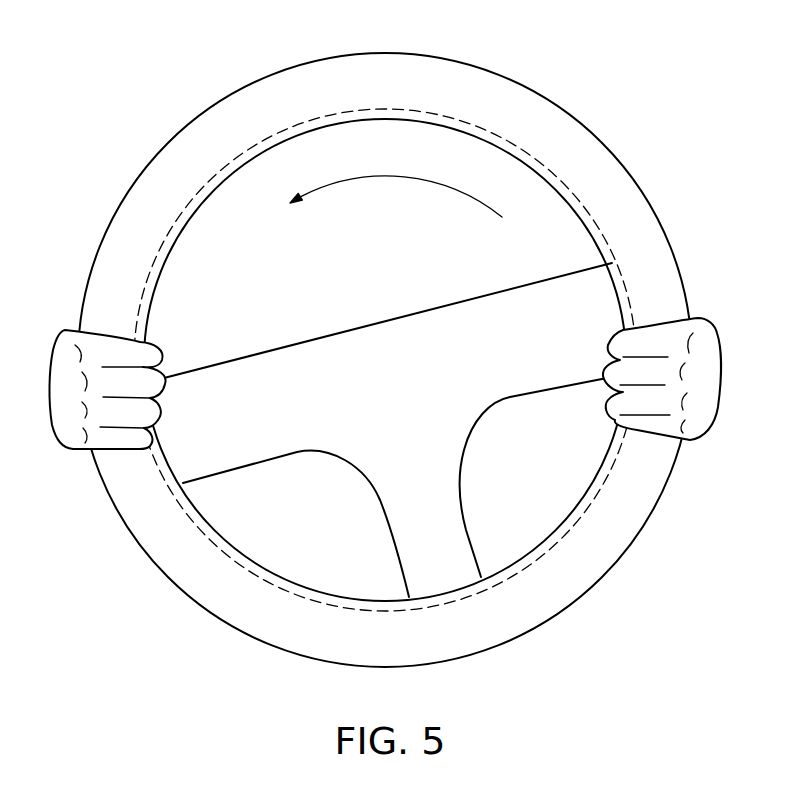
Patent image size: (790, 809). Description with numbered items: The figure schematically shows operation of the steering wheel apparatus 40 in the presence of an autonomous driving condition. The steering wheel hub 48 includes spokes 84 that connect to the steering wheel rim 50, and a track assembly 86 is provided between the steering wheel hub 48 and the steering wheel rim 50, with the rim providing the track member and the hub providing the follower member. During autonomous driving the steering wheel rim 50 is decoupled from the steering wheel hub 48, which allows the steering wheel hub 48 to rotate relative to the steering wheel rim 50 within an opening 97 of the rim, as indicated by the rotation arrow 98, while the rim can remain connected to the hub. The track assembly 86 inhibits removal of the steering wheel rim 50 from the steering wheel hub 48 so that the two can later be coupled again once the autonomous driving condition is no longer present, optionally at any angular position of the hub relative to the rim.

The steering wheel apparatus 40 is at (385, 360).
The steering wheel rim 50 is at (436, 370).
The track assembly 86 is at (385, 318).
The spokes 84 is at (587, 305).
The steering wheel hub 48 is at (257, 620).
The opening 97 is at (131, 226).
The rotation direction arrow 98 is at (390, 176).